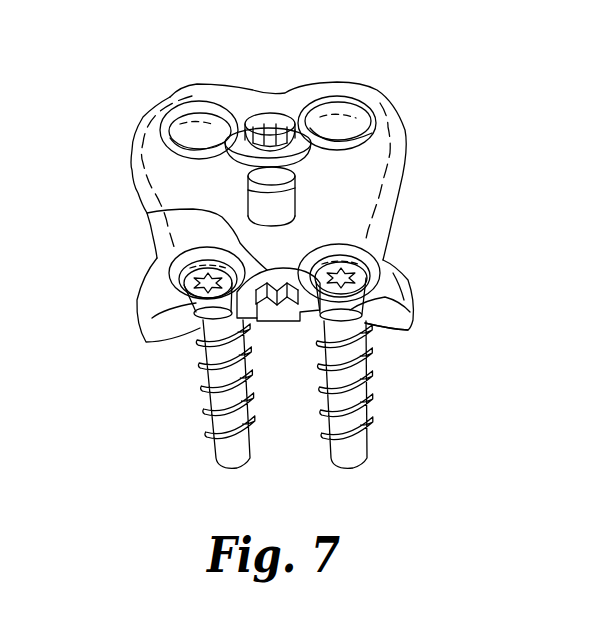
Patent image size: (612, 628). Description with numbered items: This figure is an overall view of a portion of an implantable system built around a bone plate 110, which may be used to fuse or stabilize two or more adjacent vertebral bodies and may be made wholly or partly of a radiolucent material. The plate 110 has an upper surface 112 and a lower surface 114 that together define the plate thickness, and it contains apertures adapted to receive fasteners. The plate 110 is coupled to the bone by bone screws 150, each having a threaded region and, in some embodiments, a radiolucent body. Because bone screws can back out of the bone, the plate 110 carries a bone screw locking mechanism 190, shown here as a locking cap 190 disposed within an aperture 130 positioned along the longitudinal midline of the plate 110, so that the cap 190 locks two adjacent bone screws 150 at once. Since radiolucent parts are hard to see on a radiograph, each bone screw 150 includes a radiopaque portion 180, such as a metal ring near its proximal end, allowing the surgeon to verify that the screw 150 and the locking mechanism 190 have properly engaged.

The bone plate 110 is at (390, 118).
The upper surface 112 is at (385, 278).
The lower surface 114 is at (392, 333).
The aperture 130 is at (295, 328).
The bone screw 150 is at (372, 424).
The radiopaque portion 180 is at (208, 320).
The bone screw locking mechanism 190 is at (146, 213).